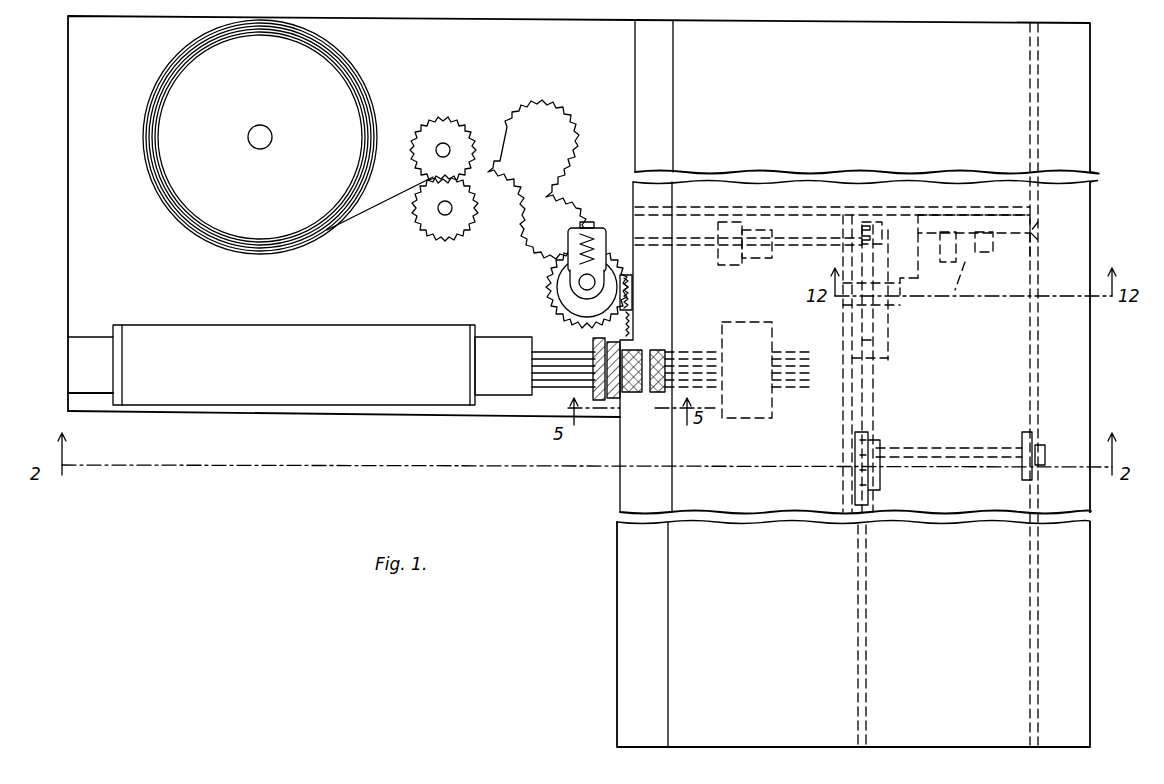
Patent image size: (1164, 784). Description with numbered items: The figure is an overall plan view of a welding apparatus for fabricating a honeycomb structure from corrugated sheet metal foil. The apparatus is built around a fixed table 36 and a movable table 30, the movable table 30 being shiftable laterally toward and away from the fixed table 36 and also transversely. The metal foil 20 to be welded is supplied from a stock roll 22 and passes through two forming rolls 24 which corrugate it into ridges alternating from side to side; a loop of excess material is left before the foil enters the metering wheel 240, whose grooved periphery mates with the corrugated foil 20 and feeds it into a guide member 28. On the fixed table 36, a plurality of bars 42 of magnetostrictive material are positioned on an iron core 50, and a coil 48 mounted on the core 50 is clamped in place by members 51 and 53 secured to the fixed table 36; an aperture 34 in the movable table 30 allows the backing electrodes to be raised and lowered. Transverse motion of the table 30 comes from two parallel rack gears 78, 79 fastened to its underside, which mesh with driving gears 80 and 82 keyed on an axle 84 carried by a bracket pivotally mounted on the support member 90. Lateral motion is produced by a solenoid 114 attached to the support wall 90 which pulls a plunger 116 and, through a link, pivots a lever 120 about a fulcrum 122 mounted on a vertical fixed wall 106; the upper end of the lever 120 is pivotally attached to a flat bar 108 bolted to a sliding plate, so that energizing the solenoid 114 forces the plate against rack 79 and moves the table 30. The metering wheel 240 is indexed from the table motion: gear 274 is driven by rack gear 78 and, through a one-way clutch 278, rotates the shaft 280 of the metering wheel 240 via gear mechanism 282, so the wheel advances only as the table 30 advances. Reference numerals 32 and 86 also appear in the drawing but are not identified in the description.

The metal foil 20 is at (556, 106).
The stock roll 22 is at (363, 93).
The forming rolls 24 is at (452, 123).
The guide member 28 is at (633, 302).
The movable table 30 is at (683, 622).
The middle frame section 32 is at (624, 491).
The aperture 34 is at (641, 408).
The fixed table 36 is at (68, 202).
The bars of magnetostrictive material 42 is at (542, 349).
The coil 48 is at (302, 326).
The iron core 50 is at (101, 335).
The clamping member 51 is at (123, 327).
The clamping member 53 is at (473, 325).
The rack gear 78 is at (857, 710).
The rack gear 79 is at (1030, 698).
The driving gear 80 is at (875, 432).
The driving gear 82 is at (1040, 432).
The axle 84 is at (965, 452).
The link 86 is at (880, 348).
The support member 90 is at (843, 322).
The vertical fixed wall 106 is at (1022, 222).
The flat bar 108 is at (1036, 240).
The solenoid 114 is at (918, 300).
The plunger 116 is at (939, 264).
The lever 120 is at (993, 261).
The fulcrum 122 is at (959, 294).
The metering wheel 240 is at (552, 283).
The gear 274 is at (878, 226).
The clutch 278 is at (747, 258).
The shaft 280 is at (720, 252).
The gear mechanism 282 is at (587, 221).